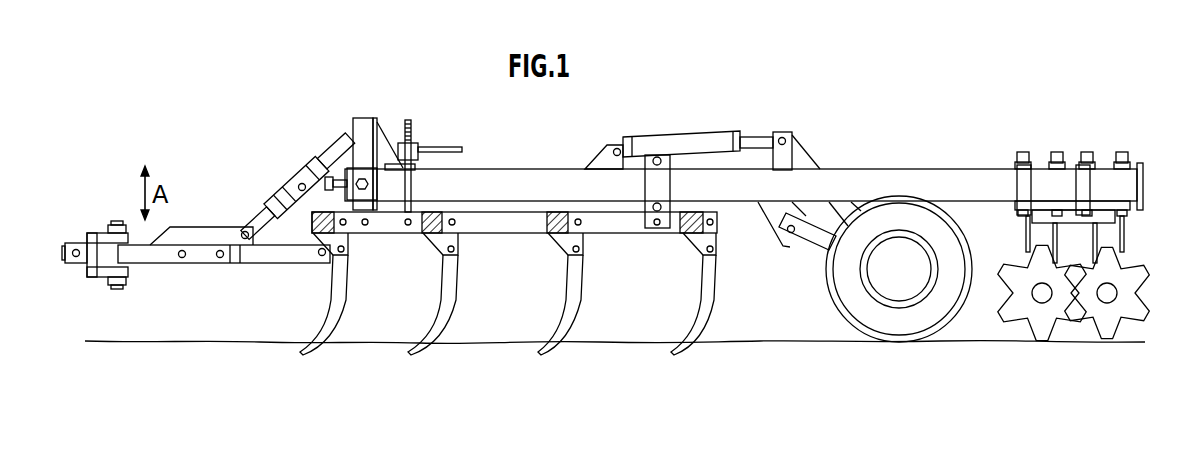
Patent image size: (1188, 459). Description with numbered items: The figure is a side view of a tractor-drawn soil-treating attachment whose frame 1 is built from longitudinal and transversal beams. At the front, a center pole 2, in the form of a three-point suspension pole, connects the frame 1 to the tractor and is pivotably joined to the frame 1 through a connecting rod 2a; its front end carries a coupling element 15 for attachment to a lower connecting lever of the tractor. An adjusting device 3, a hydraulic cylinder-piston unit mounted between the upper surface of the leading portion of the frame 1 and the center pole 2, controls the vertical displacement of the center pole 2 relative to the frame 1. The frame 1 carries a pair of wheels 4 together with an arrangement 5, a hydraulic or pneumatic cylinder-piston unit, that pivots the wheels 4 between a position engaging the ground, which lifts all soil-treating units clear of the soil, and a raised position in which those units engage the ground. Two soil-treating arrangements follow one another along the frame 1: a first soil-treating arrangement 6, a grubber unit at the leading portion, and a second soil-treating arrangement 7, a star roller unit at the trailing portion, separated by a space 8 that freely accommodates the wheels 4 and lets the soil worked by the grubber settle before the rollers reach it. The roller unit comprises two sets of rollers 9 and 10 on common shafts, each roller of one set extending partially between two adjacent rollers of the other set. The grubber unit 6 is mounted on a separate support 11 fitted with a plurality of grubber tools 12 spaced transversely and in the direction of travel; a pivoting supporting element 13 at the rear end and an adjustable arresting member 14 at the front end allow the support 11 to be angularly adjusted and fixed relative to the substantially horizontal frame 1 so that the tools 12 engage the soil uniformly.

The frame 1 is at (850, 168).
The center pole 2 is at (213, 265).
The connecting rod 2a is at (322, 257).
The adjusting device 3 is at (290, 181).
The wheels 4 is at (893, 293).
The arrangement for displacing the wheels 5 is at (688, 150).
The first soil-treating arrangement 6 is at (498, 354).
The second soil-treating arrangement 7 is at (1075, 330).
The space 8 is at (793, 313).
The rollers of first set 9 is at (1015, 318).
The rollers of second set 10 is at (1137, 313).
The support 11 is at (513, 228).
The grubber tools 12 is at (343, 298).
The pivoting supporting element 13 is at (658, 228).
The adjustable arresting member 14 is at (420, 152).
The coupling element 15 is at (77, 268).